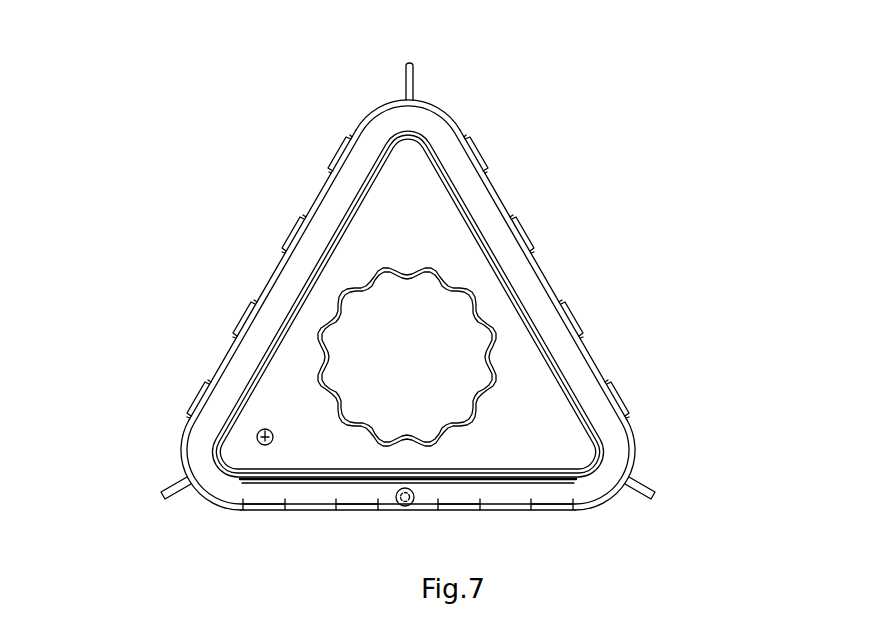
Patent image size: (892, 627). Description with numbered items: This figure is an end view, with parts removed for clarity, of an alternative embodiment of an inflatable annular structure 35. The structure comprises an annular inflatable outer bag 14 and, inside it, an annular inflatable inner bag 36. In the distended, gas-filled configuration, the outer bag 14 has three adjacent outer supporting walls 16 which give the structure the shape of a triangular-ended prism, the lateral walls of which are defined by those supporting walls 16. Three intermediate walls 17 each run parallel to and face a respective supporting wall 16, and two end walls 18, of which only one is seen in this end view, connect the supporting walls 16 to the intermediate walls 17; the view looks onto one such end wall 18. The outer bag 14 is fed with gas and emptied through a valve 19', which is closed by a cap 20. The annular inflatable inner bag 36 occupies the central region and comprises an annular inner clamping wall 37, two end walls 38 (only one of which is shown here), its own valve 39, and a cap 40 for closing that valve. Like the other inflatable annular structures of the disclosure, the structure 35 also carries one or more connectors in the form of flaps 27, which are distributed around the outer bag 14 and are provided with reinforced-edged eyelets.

The annular inflatable outer bag 14 is at (602, 348).
The outer supporting wall 16 is at (272, 275).
The intermediate wall 17 is at (343, 218).
The end wall 18 is at (242, 375).
The bottom rail segment 19' is at (408, 516).
The cap 20 is at (418, 493).
The flap 27 is at (412, 80).
The inflatable annular structure 35 is at (633, 182).
The annular inflatable inner bag 36 is at (469, 351).
The annular inner clamping wall 37 is at (440, 292).
The end wall 38 is at (450, 250).
The valve 39 is at (268, 429).
The cap 40 is at (274, 438).